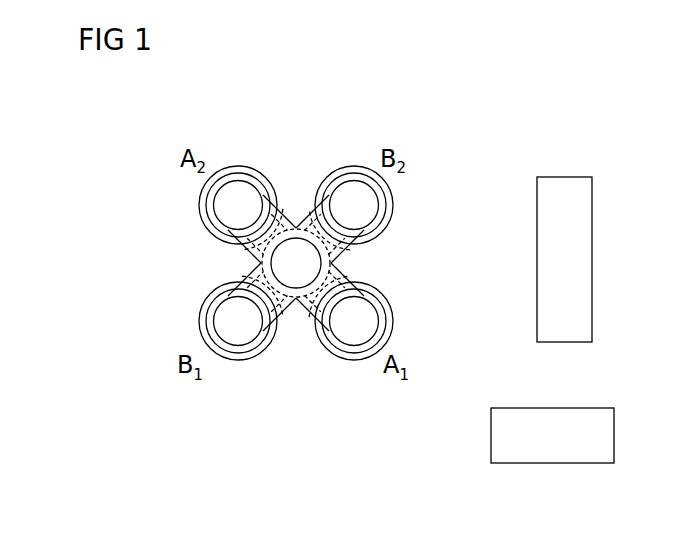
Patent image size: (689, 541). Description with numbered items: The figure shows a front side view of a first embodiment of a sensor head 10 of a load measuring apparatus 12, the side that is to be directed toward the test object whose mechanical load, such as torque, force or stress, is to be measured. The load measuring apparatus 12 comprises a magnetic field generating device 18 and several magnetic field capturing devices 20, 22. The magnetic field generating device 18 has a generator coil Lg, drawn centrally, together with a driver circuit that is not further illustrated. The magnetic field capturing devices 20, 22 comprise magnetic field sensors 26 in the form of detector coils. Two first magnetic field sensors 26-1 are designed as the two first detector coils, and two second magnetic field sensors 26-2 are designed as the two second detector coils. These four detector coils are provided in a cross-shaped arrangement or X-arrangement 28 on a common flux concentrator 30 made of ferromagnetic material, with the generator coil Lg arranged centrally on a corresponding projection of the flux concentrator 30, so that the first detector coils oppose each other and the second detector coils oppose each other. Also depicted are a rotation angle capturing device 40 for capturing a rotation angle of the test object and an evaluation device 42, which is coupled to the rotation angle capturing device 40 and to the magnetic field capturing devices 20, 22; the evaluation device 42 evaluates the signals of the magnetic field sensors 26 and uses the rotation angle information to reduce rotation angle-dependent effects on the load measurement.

The sensor head 10 is at (151, 269).
The load measuring apparatus 12 is at (220, 438).
The magnetic field generating device 18 is at (337, 262).
The magnetic field capturing device 20 is at (221, 149).
The magnetic field capturing device 22 is at (179, 221).
The magnetic field sensor 26 is at (244, 144).
The first magnetic field sensor 26-1 is at (179, 188).
The second magnetic field sensor 26-2 is at (403, 197).
The X-arrangement 28 is at (359, 144).
The flux concentrator 30 is at (245, 285).
The rotation angle capturing device 40 is at (564, 259).
The evaluation device 42 is at (552, 435).